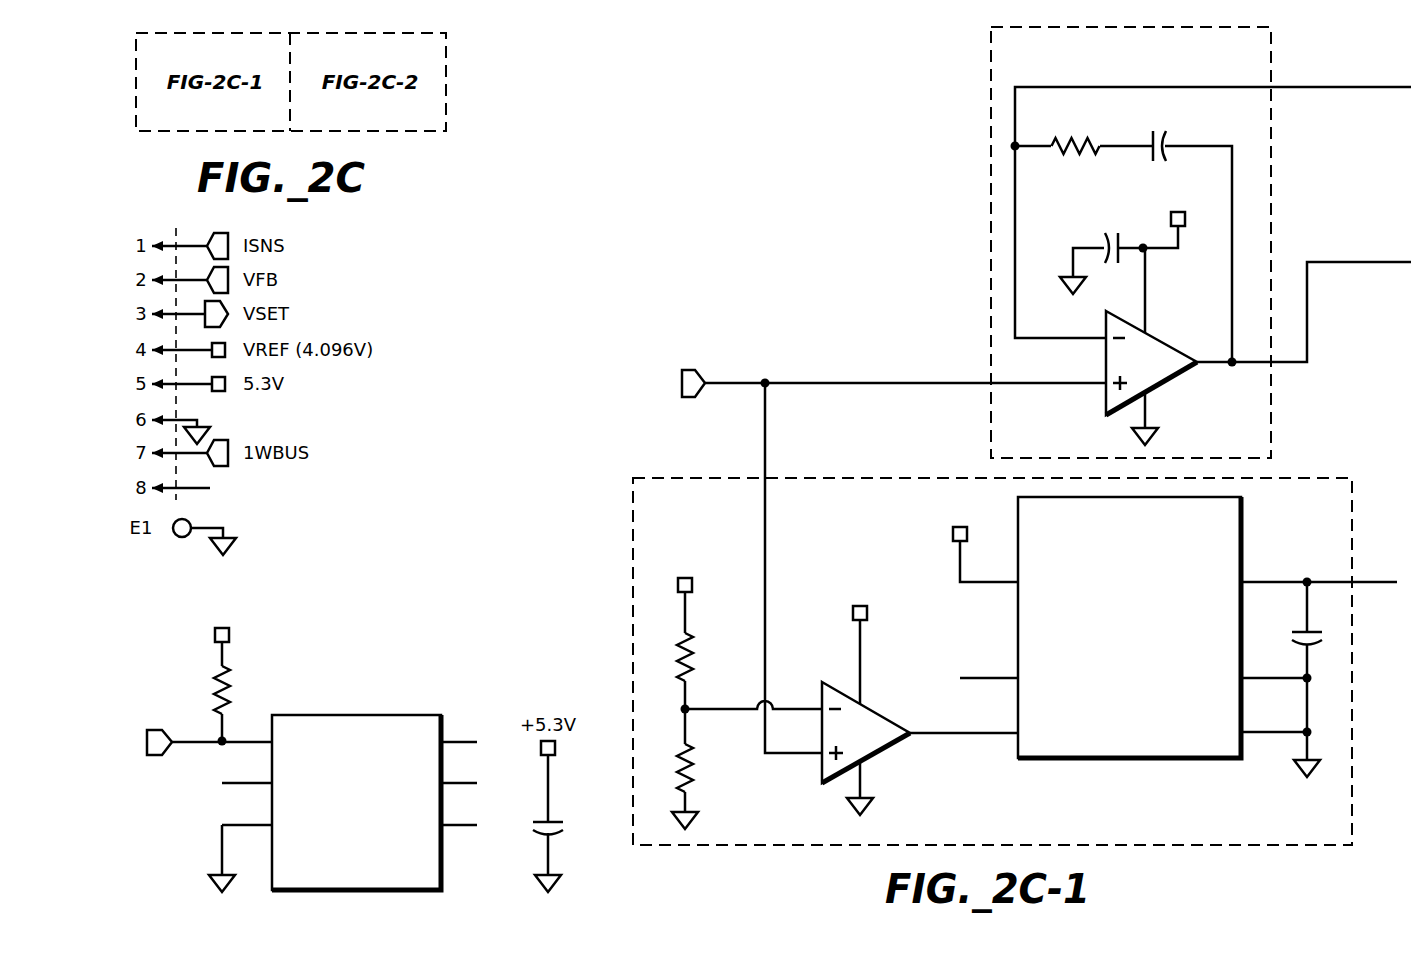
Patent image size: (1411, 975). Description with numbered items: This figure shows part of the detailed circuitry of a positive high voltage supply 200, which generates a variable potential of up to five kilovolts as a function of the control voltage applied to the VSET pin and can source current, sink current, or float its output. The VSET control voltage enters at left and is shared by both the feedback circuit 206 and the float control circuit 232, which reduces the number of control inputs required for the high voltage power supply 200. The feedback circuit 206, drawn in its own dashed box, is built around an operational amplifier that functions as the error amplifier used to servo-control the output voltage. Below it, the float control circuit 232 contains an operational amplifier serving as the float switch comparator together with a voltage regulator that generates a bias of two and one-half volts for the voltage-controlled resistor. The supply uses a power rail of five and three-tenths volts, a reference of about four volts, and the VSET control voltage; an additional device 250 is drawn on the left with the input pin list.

The high voltage power supply 200 is at (786, 66).
The feedback circuit 206 is at (991, 232).
The float control circuit 232 is at (633, 548).
The 1-wire bus device U3 250 is at (325, 714).